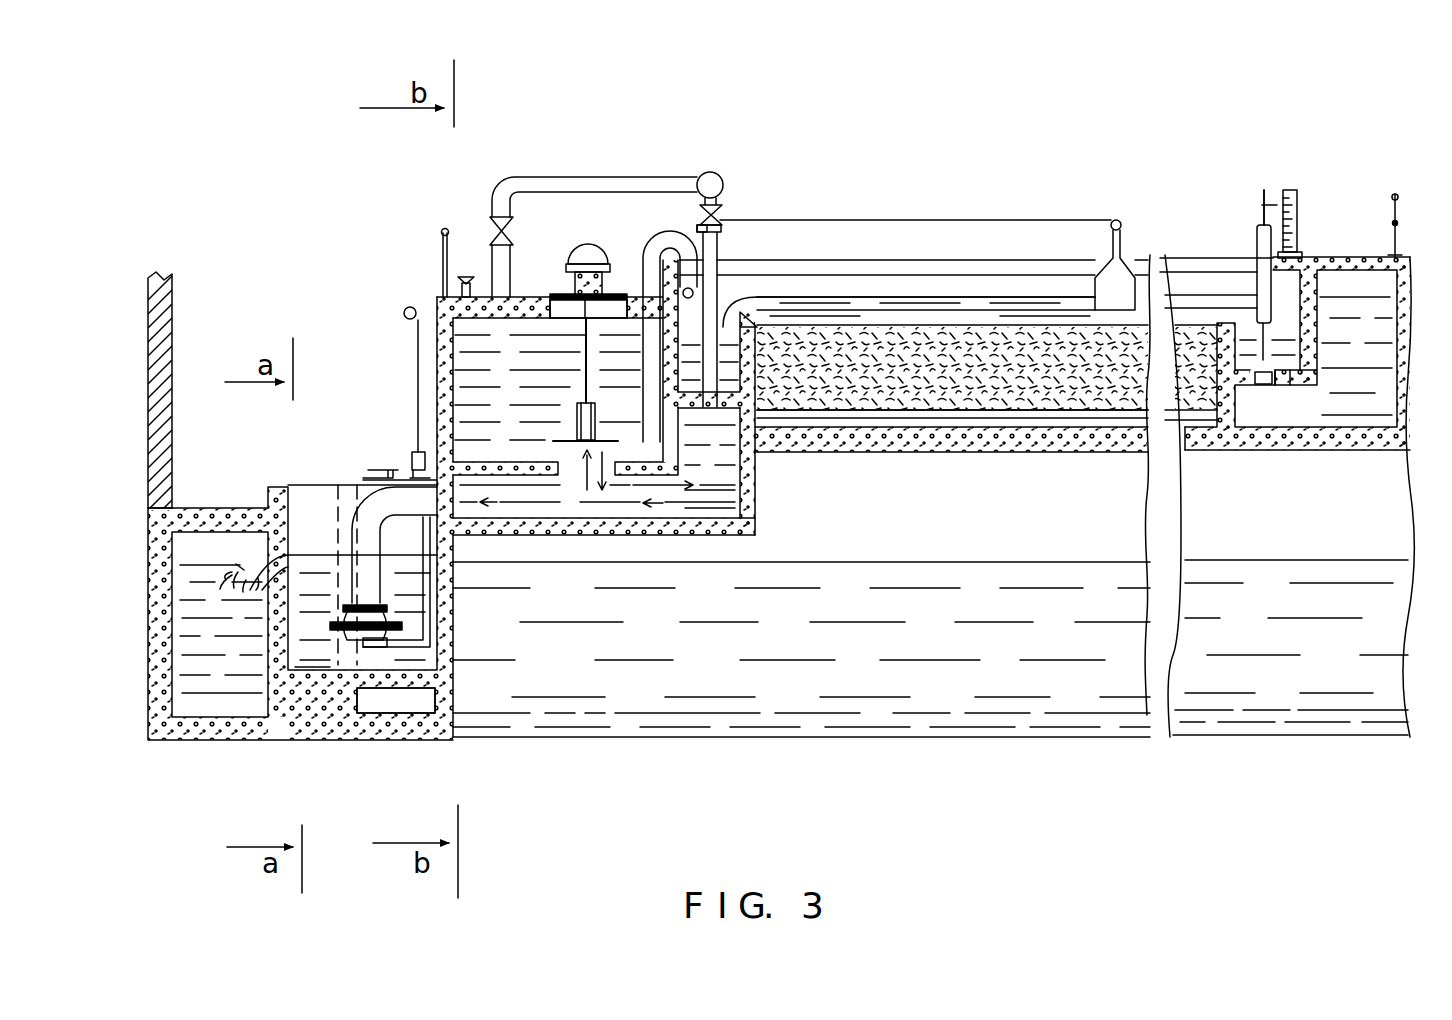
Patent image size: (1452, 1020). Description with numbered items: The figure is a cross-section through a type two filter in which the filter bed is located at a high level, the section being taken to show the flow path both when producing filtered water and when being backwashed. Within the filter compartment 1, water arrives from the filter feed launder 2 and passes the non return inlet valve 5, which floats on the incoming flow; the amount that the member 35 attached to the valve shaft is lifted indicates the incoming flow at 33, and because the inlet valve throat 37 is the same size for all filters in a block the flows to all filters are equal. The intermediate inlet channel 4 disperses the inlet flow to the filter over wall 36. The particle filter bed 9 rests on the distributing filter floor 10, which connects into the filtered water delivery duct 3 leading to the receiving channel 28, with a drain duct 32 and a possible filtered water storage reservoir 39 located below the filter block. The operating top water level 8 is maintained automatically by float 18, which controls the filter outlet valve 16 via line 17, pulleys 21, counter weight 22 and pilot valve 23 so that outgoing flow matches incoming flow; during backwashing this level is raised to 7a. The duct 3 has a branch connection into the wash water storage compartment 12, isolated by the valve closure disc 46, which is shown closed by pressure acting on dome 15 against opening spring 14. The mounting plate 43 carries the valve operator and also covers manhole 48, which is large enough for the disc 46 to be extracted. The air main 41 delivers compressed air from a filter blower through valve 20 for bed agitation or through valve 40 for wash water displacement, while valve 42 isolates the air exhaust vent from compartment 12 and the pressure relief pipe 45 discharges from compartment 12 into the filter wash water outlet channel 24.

The filter compartment 1 is at (1132, 102).
The filter feed launder 2 is at (1370, 350).
The filtered water delivery duct 3 is at (713, 455).
The intermediate inlet channel 4 is at (1293, 362).
The non return inlet valve 5 is at (1262, 360).
The raised backwash water level 7a is at (930, 295).
The filter operating top water level 8 is at (1023, 310).
The particle filter bed 9 is at (1023, 370).
The distributing filter floor 10 is at (960, 410).
The wash water storage compartment 12 is at (445, 348).
The opening spring 14 is at (572, 287).
The dome 15 is at (588, 245).
The filter outlet valve 16 is at (343, 637).
The line 17 is at (1000, 220).
The float 18 is at (1115, 257).
The air agitation valve 20 is at (718, 227).
The pulleys 21 is at (720, 200).
The counter weight 22 is at (418, 452).
The pilot valve 23 is at (363, 478).
The filter wash water outlet channel 24 is at (690, 343).
The receiving channel for filtered water 28 is at (197, 630).
The drain duct 32 is at (390, 703).
The flow indicator 33 is at (1297, 218).
The lift indicator attached to valve shaft 35 is at (1264, 190).
The wall 36 is at (1227, 323).
The inlet valve throat 37 is at (1268, 378).
The filtered water storage reservoir 39 is at (822, 647).
The wash water displacement valve 40 is at (505, 230).
The air main 41 is at (723, 180).
The air exhaust vent isolating valve 42 is at (465, 277).
The mounting plate 43 is at (612, 297).
The pressure relief pipe 45 is at (668, 232).
The valve closure disc 46 is at (567, 428).
The manhole 48 is at (548, 297).